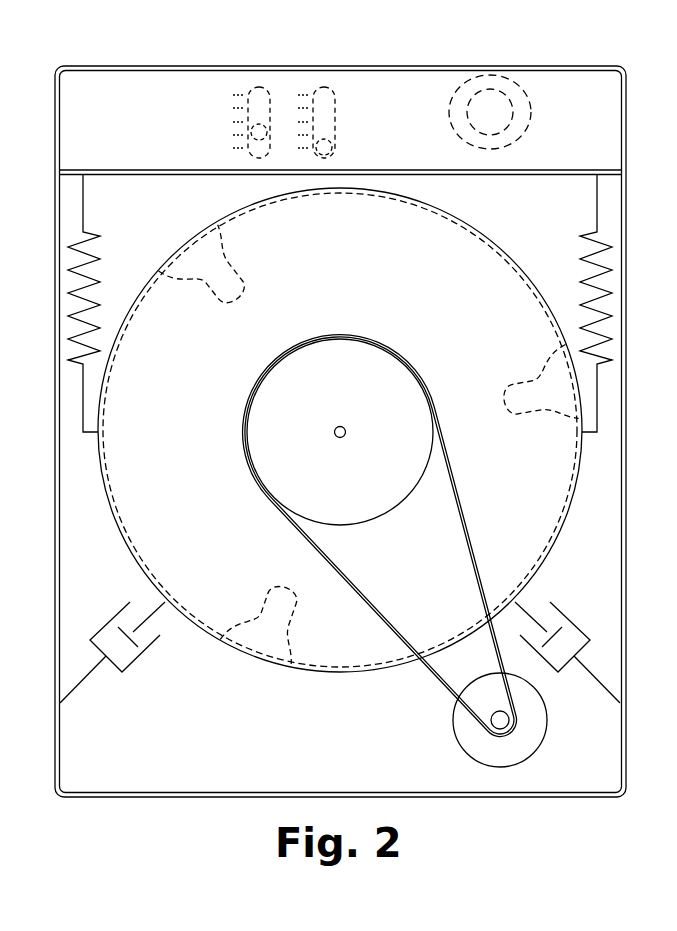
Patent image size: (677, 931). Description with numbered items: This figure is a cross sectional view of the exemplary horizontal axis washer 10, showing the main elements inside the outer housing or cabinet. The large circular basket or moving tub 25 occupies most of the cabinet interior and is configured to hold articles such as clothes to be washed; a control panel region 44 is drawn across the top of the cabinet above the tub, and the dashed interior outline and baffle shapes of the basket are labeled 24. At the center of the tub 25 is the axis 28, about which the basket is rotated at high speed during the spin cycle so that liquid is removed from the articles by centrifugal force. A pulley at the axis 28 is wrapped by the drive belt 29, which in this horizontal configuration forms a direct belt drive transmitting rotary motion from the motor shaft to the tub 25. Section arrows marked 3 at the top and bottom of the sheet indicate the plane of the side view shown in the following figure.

The washer 10 is at (292, 46).
The control panel / backsplash 44 is at (147, 134).
The basket or moving tub 25 is at (228, 196).
The wash basket 24 is at (341, 430).
The axis 28 is at (334, 430).
The drive belt 29 is at (246, 462).
The section line for FIG. 3 is at (579, 430).